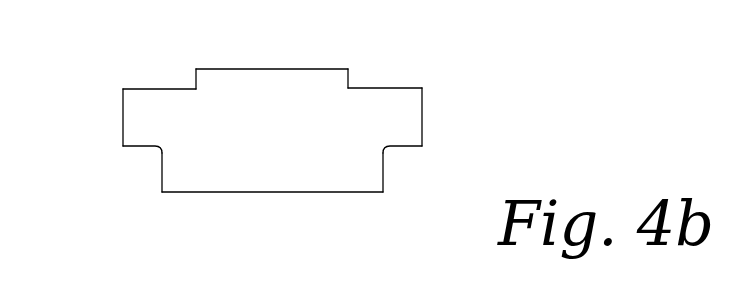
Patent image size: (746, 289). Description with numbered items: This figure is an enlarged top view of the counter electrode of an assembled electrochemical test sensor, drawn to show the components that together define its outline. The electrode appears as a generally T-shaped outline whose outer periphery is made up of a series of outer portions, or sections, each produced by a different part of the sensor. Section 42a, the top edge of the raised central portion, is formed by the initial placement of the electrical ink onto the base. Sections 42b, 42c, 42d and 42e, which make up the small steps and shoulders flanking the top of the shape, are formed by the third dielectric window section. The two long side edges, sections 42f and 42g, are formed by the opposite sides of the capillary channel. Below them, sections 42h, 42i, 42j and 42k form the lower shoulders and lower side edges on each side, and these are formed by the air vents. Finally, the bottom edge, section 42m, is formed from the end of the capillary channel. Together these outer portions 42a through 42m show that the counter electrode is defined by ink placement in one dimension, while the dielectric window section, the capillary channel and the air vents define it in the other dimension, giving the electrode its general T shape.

The section 42a is at (325, 69).
The section 42b is at (350, 78).
The section 42c is at (195, 81).
The section 42d is at (413, 87).
The section 42e is at (132, 89).
The section 42f is at (422, 112).
The section 42g is at (123, 112).
The section 42h is at (413, 148).
The section 42i is at (132, 148).
The section 42j is at (385, 182).
The section 42k is at (162, 180).
The section 42m is at (225, 193).